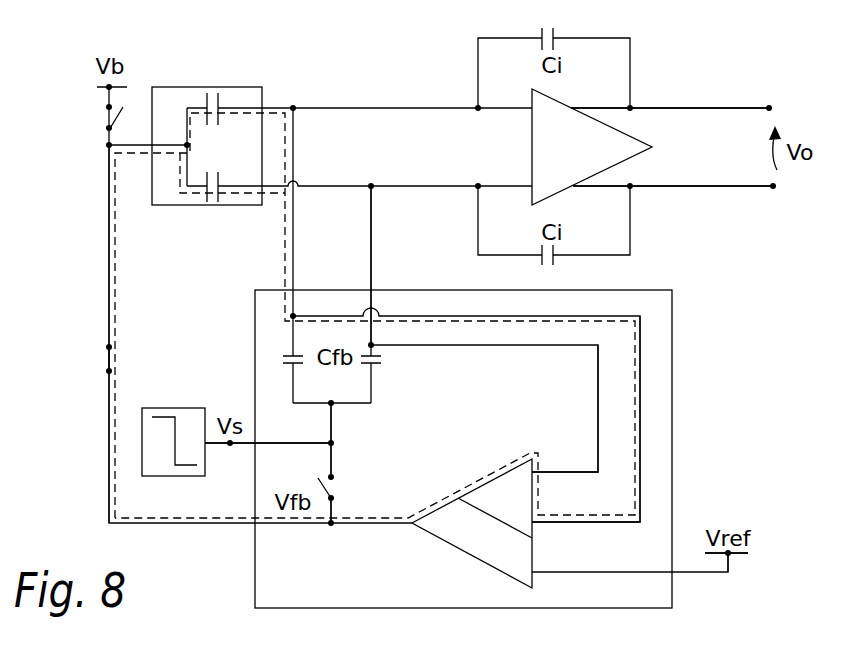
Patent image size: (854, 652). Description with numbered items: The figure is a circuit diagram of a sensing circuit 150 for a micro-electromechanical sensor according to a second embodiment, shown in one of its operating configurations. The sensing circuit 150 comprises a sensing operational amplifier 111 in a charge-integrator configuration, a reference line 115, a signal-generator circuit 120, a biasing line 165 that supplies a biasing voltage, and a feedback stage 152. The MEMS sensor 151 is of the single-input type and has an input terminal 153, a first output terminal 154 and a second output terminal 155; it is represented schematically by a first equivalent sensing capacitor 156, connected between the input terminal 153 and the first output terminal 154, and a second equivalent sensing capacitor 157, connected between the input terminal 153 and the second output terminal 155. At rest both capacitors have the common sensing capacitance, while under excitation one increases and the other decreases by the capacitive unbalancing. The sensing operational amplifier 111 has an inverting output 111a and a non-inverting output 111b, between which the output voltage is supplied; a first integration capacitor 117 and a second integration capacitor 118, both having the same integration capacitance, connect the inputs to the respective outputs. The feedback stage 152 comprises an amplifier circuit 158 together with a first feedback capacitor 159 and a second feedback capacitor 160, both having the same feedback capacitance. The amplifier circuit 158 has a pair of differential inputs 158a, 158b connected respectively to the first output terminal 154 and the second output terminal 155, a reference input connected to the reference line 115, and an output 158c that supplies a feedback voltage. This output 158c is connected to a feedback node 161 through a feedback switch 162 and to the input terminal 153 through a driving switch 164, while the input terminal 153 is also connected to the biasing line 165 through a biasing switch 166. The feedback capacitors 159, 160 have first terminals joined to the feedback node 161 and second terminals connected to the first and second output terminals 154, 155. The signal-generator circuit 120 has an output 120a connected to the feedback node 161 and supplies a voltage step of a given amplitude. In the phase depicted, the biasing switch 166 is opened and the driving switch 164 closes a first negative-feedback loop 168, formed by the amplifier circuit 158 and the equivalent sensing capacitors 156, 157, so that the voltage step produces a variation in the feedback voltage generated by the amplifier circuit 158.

The sensing operational amplifier 111 is at (613, 141).
The inverting output 111a is at (769, 107).
The non-inverting output 111b is at (773, 188).
The reference line 115 is at (740, 557).
The first integration capacitor 117 is at (555, 34).
The second integration capacitor 118 is at (553, 262).
The signal-generator circuit 120 is at (170, 408).
The output of signal-generator circuit 120a is at (230, 446).
The sensing circuit 150 is at (78, 420).
The MEMS sensor 151 is at (252, 95).
The feedback stage 152 is at (263, 590).
The input terminal 153 is at (109, 145).
The first output terminal 154 is at (293, 107).
The second output terminal 155 is at (371, 185).
The first equivalent sensing capacitor 156 is at (207, 94).
The second equivalent sensing capacitor 157 is at (206, 200).
The amplifier circuit 158 is at (463, 540).
The first differential input 158a is at (596, 470).
The second differential input 158b is at (640, 524).
The output of amplifier circuit 158c is at (331, 526).
The first feedback capacitor 159 is at (293, 365).
The second feedback capacitor 160 is at (376, 364).
The feedback node 161 is at (331, 443).
The feedback switch 162 is at (337, 490).
The driving switch 164 is at (109, 360).
The biasing line 165 is at (125, 99).
The biasing switch 166 is at (108, 118).
The first negative-feedback loop 168 is at (100, 229).